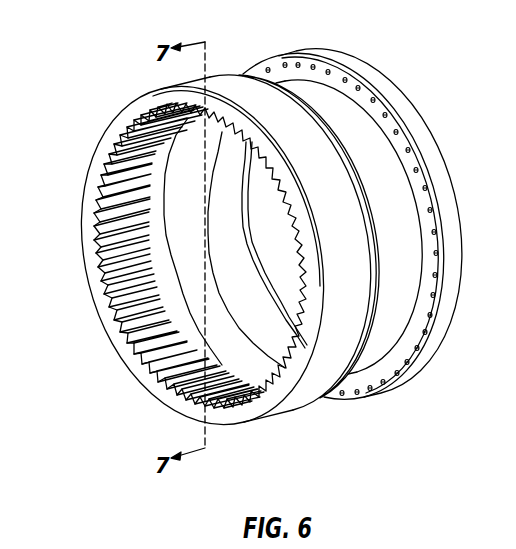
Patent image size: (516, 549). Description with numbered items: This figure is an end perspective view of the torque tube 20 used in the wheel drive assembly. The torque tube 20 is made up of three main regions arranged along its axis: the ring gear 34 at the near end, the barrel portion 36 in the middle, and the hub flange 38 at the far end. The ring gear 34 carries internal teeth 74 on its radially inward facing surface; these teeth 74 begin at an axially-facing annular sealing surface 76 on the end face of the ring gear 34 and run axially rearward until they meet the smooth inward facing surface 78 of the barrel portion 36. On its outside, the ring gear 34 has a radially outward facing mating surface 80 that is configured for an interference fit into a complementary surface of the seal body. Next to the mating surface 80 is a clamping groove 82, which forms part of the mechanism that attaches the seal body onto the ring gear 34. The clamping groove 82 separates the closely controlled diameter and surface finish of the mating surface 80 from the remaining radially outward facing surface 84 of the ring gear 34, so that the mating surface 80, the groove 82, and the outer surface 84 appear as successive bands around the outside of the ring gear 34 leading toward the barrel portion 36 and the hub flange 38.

The torque tube 20 is at (109, 93).
The ring gear 34 is at (201, 84).
The barrel portion 36 is at (280, 85).
The hub flange 38 is at (320, 66).
The internal teeth 74 is at (110, 236).
The axially-facing annular sealing surface 76 is at (91, 203).
The smooth inward facing surface 78 is at (164, 183).
The mating surface 80 is at (255, 129).
The clamping groove 82 is at (285, 150).
The radially outward facing surface 84 is at (330, 186).